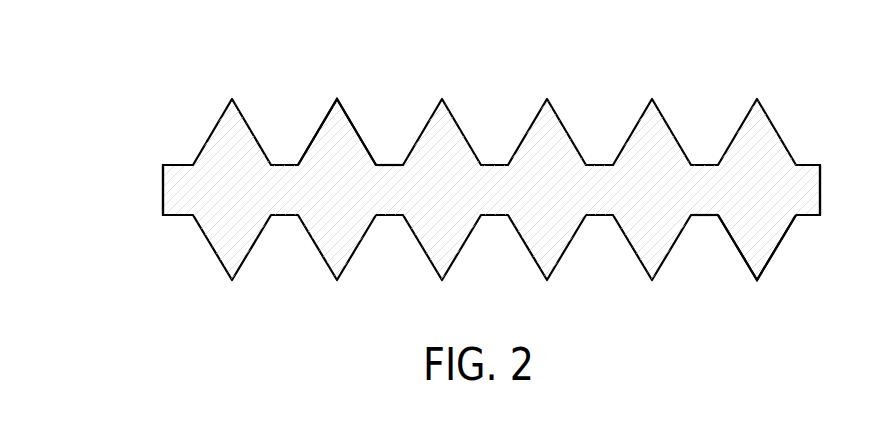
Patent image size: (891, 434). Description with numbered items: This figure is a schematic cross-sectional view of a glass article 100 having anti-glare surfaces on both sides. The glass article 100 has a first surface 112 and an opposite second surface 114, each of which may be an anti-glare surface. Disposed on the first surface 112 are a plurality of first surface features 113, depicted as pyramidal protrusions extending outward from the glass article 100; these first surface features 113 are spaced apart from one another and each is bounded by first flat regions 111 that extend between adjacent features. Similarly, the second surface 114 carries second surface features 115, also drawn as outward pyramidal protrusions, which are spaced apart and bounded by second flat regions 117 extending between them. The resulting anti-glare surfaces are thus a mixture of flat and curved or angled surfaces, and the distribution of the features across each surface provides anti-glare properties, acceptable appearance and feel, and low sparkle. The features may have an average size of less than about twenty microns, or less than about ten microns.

The glass article 100 is at (445, 147).
The first flat regions 111 is at (383, 163).
The first surface 112 is at (182, 163).
The first surface features 113 is at (325, 113).
The second surface 114 is at (805, 218).
The second surface features 115 is at (768, 262).
The second flat regions 117 is at (710, 215).